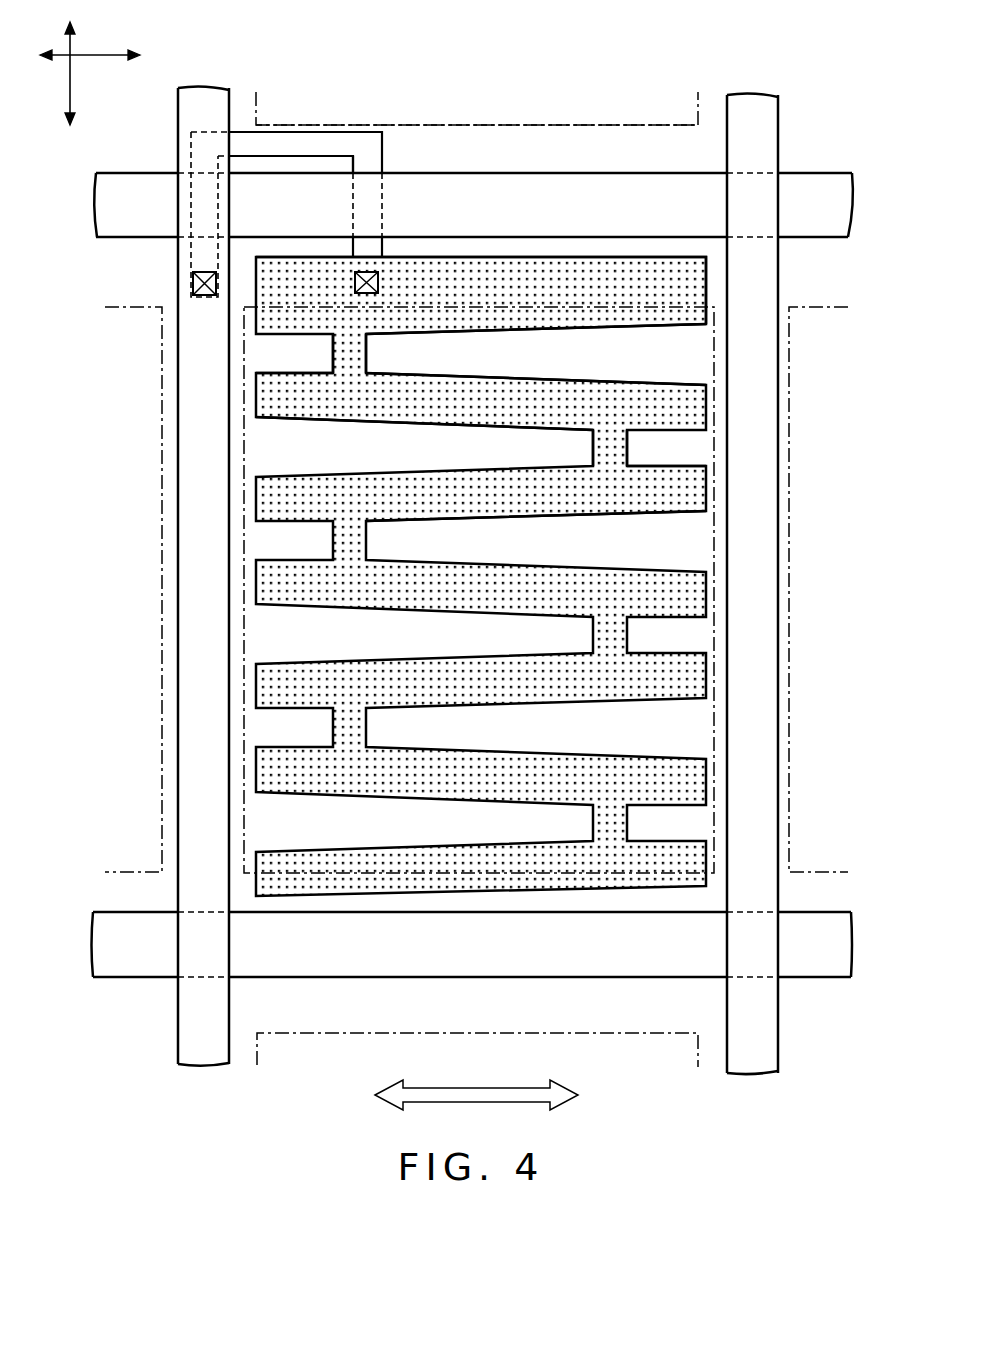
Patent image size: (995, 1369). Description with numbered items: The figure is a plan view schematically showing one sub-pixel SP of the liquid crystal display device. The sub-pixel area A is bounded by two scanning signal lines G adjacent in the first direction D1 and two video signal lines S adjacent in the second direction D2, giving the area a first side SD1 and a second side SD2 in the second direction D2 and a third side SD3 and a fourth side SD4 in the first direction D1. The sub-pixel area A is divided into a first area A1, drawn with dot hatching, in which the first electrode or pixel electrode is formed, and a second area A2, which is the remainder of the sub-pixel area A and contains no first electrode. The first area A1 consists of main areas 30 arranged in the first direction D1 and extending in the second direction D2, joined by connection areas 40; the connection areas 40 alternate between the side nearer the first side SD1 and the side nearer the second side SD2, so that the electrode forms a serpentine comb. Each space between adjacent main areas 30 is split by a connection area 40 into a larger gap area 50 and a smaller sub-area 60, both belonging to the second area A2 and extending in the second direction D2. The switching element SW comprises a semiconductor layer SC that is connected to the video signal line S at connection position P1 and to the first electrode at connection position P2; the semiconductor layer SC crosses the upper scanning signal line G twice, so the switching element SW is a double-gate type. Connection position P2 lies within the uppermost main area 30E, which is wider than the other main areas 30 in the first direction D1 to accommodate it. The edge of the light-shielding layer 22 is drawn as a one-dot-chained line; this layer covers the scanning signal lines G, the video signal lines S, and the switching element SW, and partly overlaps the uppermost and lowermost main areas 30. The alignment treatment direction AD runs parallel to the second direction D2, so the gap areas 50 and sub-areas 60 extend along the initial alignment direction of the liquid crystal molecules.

The light-shielding layer 22 is at (160, 390).
The main area 30 is at (695, 463).
The uppermost main area 30E is at (700, 283).
The connection area 40 is at (368, 352).
The gap area 50 is at (505, 440).
The sub-area 60 is at (307, 360).
The connection position P1 is at (193, 283).
The connection position P2 is at (378, 283).
The semiconductor layer SC is at (300, 130).
The switching element SW is at (395, 147).
The sub-pixel SP is at (623, 235).
The first side SD1 is at (228, 490).
The second side SD2 is at (730, 515).
The third side SD3 is at (494, 235).
The fourth side SD4 is at (490, 913).
The video signal line S is at (190, 1043).
The scanning signal line G is at (829, 180).
The sub-pixel area A is at (72, 555).
The first area A1 is at (270, 580).
The second area A2 is at (270, 627).
The alignment treatment direction AD is at (476, 1086).
The first direction D1 is at (58, 73).
The second direction D2 is at (90, 44).